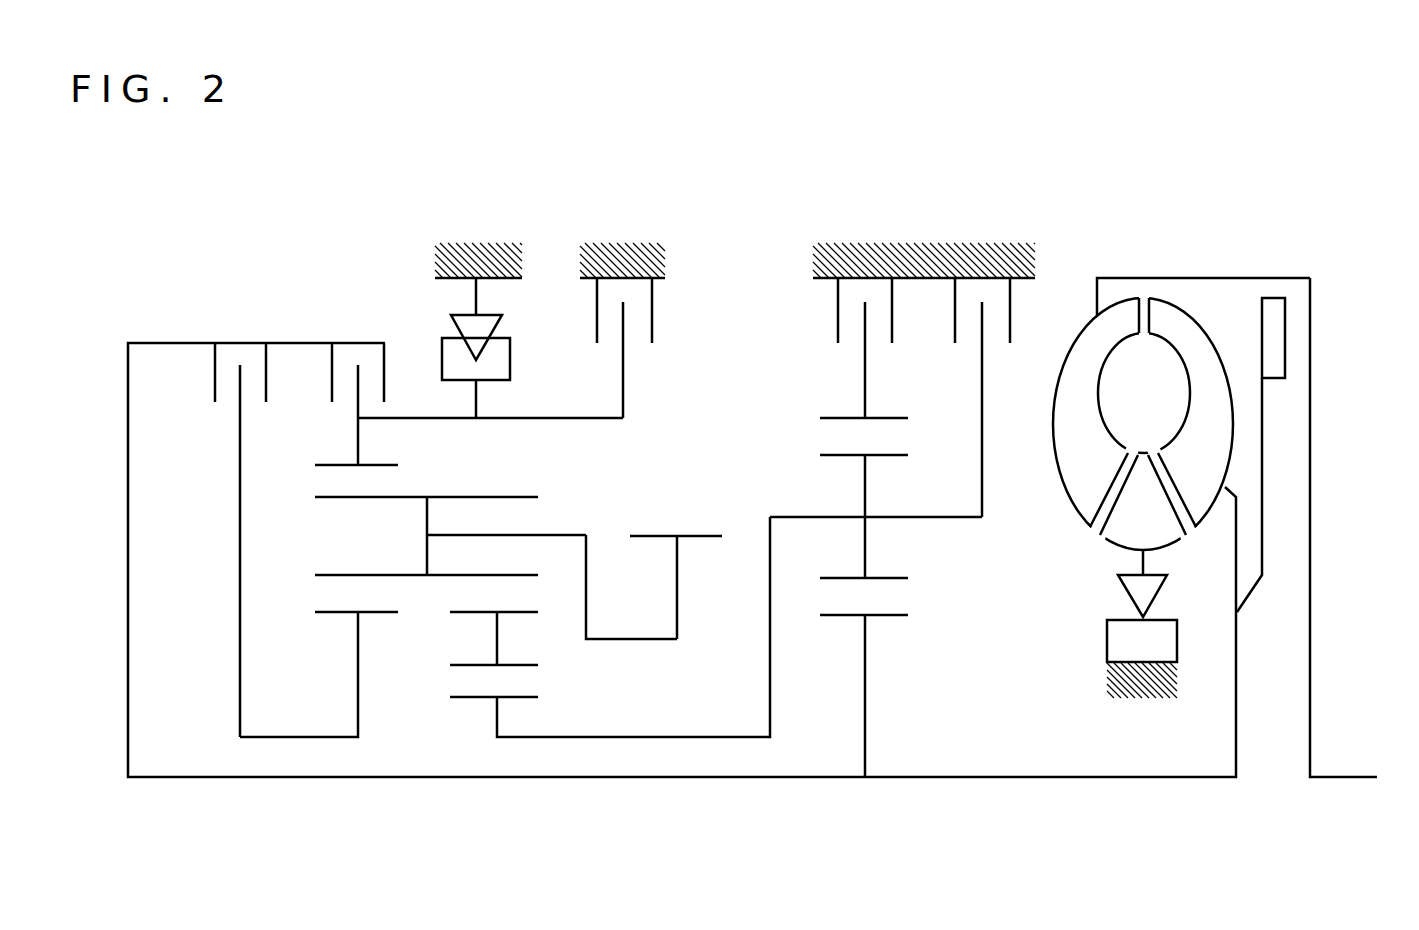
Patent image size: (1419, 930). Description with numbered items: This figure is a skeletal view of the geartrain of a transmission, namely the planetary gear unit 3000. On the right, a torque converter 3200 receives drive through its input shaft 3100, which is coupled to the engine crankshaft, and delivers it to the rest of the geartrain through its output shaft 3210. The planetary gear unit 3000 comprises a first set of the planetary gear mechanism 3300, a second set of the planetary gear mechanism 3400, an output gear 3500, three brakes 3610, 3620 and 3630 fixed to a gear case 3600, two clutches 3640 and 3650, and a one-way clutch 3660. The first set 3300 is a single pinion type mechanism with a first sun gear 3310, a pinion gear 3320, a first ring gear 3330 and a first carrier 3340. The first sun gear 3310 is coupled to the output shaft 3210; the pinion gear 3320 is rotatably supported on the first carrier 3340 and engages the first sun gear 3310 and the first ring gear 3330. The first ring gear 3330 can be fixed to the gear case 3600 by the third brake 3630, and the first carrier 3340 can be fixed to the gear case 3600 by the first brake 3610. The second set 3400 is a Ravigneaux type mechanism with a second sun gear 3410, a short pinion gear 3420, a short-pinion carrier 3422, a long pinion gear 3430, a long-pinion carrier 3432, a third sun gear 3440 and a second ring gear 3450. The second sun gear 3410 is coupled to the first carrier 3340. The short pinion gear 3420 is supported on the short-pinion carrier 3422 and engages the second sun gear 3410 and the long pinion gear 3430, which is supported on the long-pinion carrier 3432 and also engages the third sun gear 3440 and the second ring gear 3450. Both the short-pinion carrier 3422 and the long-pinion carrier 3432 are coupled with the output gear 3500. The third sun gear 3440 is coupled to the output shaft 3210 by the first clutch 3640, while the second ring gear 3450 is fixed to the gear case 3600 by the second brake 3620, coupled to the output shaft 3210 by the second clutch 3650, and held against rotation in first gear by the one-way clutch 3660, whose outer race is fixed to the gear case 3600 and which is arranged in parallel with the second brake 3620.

The planetary gear unit 3000 is at (705, 143).
The input shaft 3100 is at (1340, 778).
The torque converter 3200 is at (1183, 240).
The output shaft 3210 is at (1005, 777).
The first set of the planetary gear mechanism 3300 is at (868, 810).
The sun gear S (UD) 3310 is at (882, 671).
The pinion gear 3320 is at (896, 559).
The ring gear R (UD) 3330 is at (879, 403).
The carrier C (UD) 3340 is at (982, 480).
The second set of the planetary gear mechanism 3400 is at (499, 810).
The sun gear S (D) 3410 is at (557, 703).
The short pinion gear 3420 is at (444, 629).
The carrier C (1) 3422 is at (565, 640).
The long pinion gear 3430 is at (540, 481).
The carrier C (2) 3432 is at (517, 535).
The sun gear S (S) 3440 is at (359, 626).
The ring gear R (1) (R (2)) 3450 is at (397, 447).
The output gear 3500 is at (705, 519).
The gear case 3600 is at (478, 240).
The B1 brake 3610 is at (1007, 356).
The B2 brake 3620 is at (645, 356).
The B3 brake 3630 is at (827, 356).
The C1 clutch 3640 is at (205, 394).
The C2 clutch 3650 is at (318, 394).
The one-way clutch F 3660 is at (455, 316).